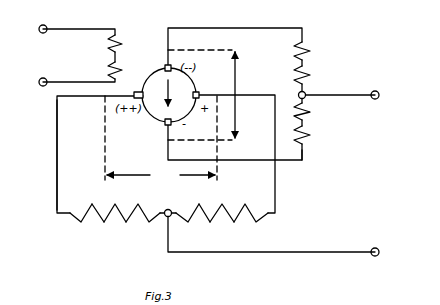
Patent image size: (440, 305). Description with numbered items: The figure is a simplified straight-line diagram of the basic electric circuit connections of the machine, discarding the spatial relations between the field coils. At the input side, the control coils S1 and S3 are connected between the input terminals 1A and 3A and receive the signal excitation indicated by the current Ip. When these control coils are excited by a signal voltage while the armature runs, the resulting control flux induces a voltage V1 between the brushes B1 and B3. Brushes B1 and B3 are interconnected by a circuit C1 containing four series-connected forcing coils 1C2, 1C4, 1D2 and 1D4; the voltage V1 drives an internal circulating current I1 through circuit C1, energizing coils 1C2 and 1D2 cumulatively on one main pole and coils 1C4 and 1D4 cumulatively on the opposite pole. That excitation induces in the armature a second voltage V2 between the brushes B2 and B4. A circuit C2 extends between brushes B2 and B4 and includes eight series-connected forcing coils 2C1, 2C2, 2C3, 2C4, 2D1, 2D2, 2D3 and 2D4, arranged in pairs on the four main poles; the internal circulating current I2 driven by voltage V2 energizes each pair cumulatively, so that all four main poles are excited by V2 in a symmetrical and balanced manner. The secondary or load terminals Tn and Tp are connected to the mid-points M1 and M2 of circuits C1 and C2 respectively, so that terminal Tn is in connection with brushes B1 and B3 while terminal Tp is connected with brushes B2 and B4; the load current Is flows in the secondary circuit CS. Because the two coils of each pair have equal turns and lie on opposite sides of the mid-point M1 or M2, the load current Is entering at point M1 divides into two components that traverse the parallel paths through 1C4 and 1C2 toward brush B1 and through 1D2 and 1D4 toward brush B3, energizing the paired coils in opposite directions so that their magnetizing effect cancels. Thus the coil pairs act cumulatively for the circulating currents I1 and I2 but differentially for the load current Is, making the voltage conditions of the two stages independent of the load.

The input terminal 1A is at (40, 26).
The input terminal 3A is at (40, 79).
The control coil S1 is at (106, 44).
The control coil S3 is at (106, 70).
The brush B1 is at (165, 66).
The brush B2 is at (199, 92).
The brush B3 is at (165, 123).
The brush B4 is at (141, 92).
The voltage V1 is at (201, 95).
The voltage V2 is at (161, 139).
The circuit C1 is at (302, 160).
The circuit C2 is at (58, 133).
The field winding (forcing coil) 1C2 is at (308, 50).
The field winding (forcing coil) 1C4 is at (308, 75).
The field winding (forcing coil) 1D2 is at (309, 111).
The field winding (forcing coil) 1D4 is at (309, 134).
The field winding (forcing coil) 2C1 is at (81, 223).
The field winding (forcing coil) 2C2 is at (92, 205).
The field winding (forcing coil) 2C3 is at (126, 223).
The field winding (forcing coil) 2C4 is at (138, 205).
The field winding (forcing coil) 2D1 is at (188, 223).
The field winding (forcing coil) 2D2 is at (199, 205).
The field winding (forcing coil) 2D3 is at (234, 223).
The field winding (forcing coil) 2D4 is at (245, 205).
The mid-point M1 is at (293, 96).
The mid-point M2 is at (154, 212).
The secondary (load) terminal Tn is at (383, 95).
The secondary (load) terminal Tp is at (383, 252).
The secondary circuit CS is at (335, 96).
The current Ip is at (94, 20).
The internal circulating current I1 is at (220, 18).
The internal circulating current I2 is at (43, 123).
The load current Is is at (326, 86).